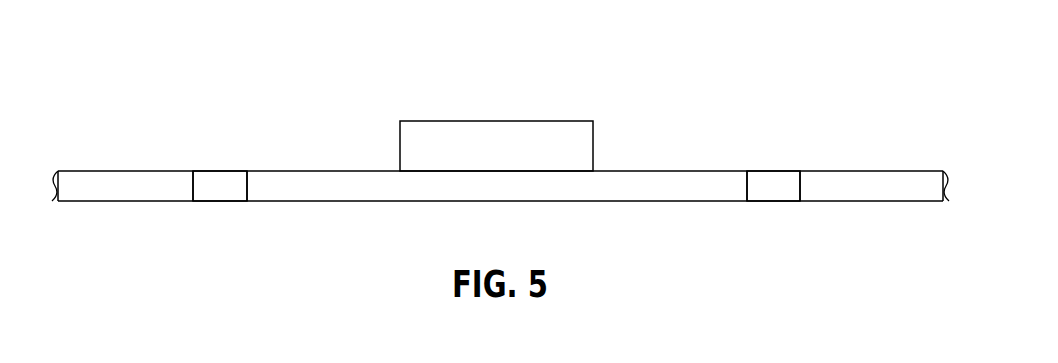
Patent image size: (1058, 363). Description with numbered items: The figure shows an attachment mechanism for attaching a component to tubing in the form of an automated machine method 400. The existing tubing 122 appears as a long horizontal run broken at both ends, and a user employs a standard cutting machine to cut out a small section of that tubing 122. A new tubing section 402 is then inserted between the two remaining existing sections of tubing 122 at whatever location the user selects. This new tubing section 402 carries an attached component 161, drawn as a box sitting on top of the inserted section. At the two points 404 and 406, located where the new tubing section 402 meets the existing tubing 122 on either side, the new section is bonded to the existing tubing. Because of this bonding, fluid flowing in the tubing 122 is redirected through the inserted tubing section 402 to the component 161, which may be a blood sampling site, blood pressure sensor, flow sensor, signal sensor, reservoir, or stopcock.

The automated machine method 400 is at (163, 50).
The tubing 122 is at (73, 170).
The new tubing section 402 is at (293, 170).
The point 404 is at (773, 203).
The point 406 is at (218, 203).
The component 161 is at (557, 120).